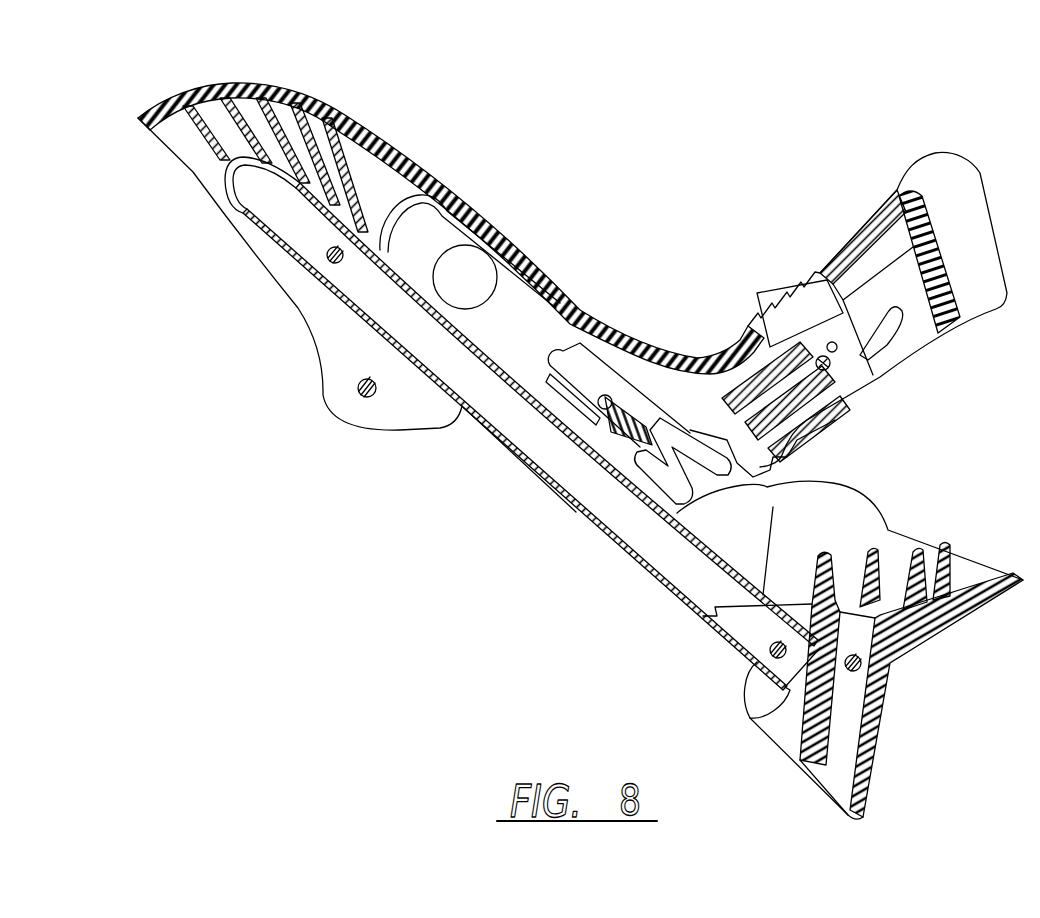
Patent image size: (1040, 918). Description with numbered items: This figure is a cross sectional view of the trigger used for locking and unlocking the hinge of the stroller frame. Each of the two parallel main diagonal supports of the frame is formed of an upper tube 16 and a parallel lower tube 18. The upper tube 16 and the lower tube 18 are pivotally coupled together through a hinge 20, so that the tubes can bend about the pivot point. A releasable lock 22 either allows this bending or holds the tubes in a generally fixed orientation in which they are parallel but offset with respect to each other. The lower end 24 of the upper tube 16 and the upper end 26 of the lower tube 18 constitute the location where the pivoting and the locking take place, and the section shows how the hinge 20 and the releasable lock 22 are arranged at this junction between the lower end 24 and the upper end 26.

The upper tube 16 is at (458, 404).
The lower tube 18 is at (880, 741).
The hinge 20 is at (767, 653).
The releasable lock 22 is at (745, 505).
The lower end of the upper tube 24 is at (748, 700).
The upper end of the lower tube 26 is at (710, 617).